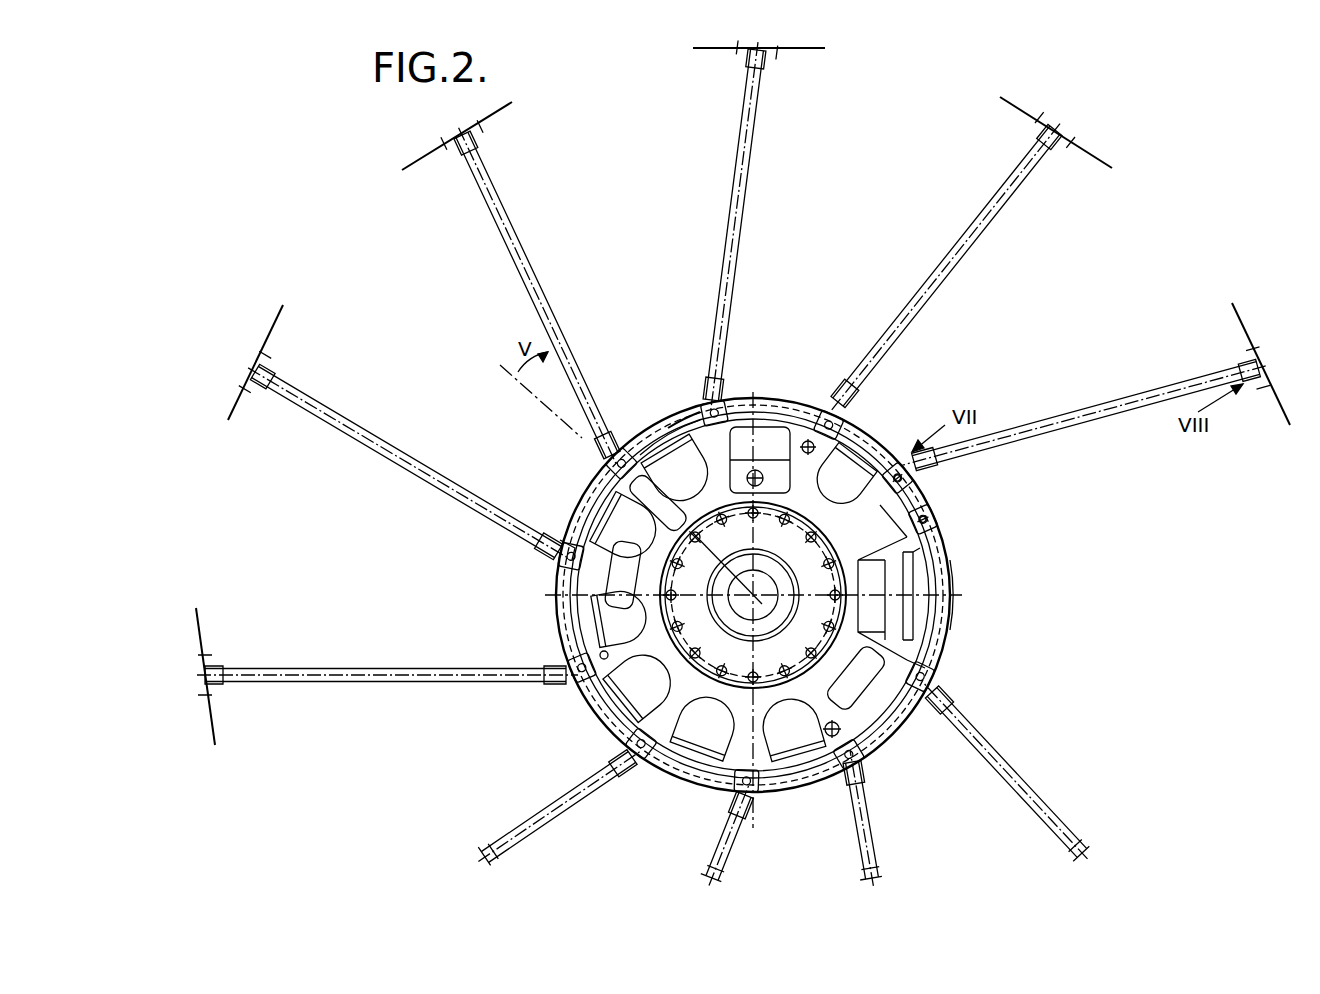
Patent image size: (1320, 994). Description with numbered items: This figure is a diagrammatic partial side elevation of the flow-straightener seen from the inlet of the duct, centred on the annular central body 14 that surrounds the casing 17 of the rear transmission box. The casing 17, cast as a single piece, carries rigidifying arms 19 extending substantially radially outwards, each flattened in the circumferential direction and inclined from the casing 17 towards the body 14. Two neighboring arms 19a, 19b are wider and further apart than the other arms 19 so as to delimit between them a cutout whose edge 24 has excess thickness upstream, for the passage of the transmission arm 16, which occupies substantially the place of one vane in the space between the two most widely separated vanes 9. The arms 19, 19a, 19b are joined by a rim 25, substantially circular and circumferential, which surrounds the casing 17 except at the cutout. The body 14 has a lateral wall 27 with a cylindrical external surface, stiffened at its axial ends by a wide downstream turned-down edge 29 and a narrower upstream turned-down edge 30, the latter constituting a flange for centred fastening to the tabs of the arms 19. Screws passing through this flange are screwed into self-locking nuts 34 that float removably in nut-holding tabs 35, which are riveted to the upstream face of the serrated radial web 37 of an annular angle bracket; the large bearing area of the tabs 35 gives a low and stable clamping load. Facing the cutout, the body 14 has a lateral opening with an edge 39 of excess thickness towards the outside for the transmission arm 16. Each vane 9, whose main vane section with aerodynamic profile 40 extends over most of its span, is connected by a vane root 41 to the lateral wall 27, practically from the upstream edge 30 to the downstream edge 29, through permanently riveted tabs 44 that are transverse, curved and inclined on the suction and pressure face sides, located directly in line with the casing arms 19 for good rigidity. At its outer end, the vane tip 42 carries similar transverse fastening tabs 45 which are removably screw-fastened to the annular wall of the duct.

The vanes 9 is at (944, 270).
The annular central body 14 is at (940, 508).
The arm 16 is at (897, 603).
The casing 17 is at (700, 605).
The rigidifying arms 19 is at (633, 647).
The arm 19a is at (860, 522).
The arm 19b is at (858, 710).
The edge 24 is at (900, 642).
The rim 25 is at (700, 752).
The lateral wall 27 is at (668, 428).
The downstream turned-down edge 29 is at (663, 457).
The upstream turned-down edge 30 is at (857, 426).
The self-locking nuts 34 is at (566, 547).
The nut-holding tabs 35 is at (697, 412).
The serrated radial web 37 is at (738, 405).
The edge 39 is at (952, 570).
The main vane section with aerodynamic profile 40 is at (1096, 393).
The vane root 41 is at (925, 460).
The vane tip 42 is at (1247, 364).
The tabs 44 is at (887, 458).
The transverse fastening tabs 45 is at (1248, 353).